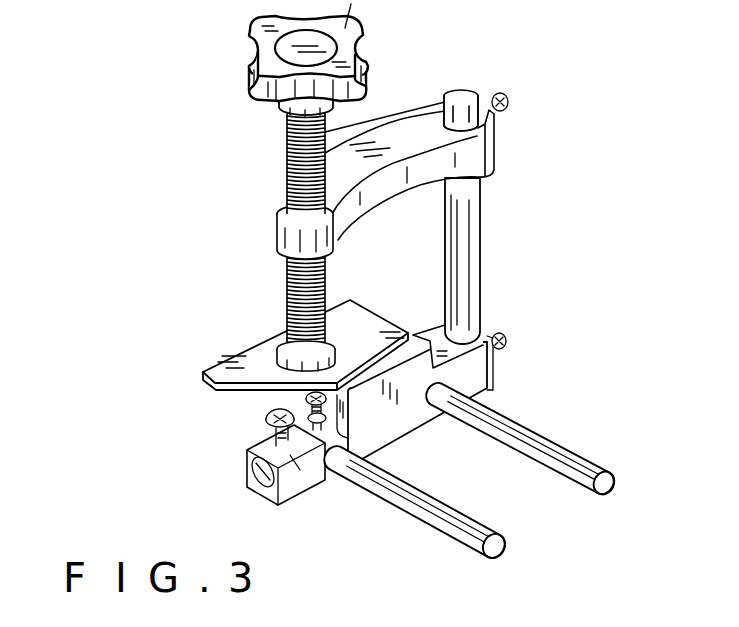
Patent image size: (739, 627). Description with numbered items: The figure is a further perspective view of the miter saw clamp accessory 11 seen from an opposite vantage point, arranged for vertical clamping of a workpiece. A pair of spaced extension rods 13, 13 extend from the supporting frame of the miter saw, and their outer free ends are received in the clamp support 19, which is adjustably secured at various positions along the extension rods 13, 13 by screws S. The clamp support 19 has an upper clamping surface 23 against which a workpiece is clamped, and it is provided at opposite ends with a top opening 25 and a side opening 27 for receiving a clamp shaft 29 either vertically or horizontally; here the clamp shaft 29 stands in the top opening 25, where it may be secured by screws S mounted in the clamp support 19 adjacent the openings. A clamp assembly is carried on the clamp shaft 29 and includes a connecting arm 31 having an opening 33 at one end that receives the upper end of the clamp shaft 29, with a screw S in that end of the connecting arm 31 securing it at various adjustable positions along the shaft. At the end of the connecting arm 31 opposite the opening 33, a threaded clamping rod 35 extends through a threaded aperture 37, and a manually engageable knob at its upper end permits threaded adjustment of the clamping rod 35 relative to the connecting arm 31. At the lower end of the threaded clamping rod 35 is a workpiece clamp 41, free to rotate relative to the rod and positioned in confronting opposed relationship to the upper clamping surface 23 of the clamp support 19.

The miter saw clamp accessory 11 is at (194, 171).
The extension rods 13 is at (548, 440).
The clamp support 19 is at (397, 402).
The upper clamping surface 23 is at (422, 342).
The top opening 25 is at (512, 343).
The side opening 27 is at (263, 473).
The clamp shaft 29 is at (470, 240).
The connecting arm 31 is at (430, 124).
The opening 33 is at (506, 106).
The threaded clamping rod 35 is at (348, 142).
The threaded aperture 37 is at (290, 213).
The workpiece clamp 41 is at (236, 372).
The screws S is at (318, 428).